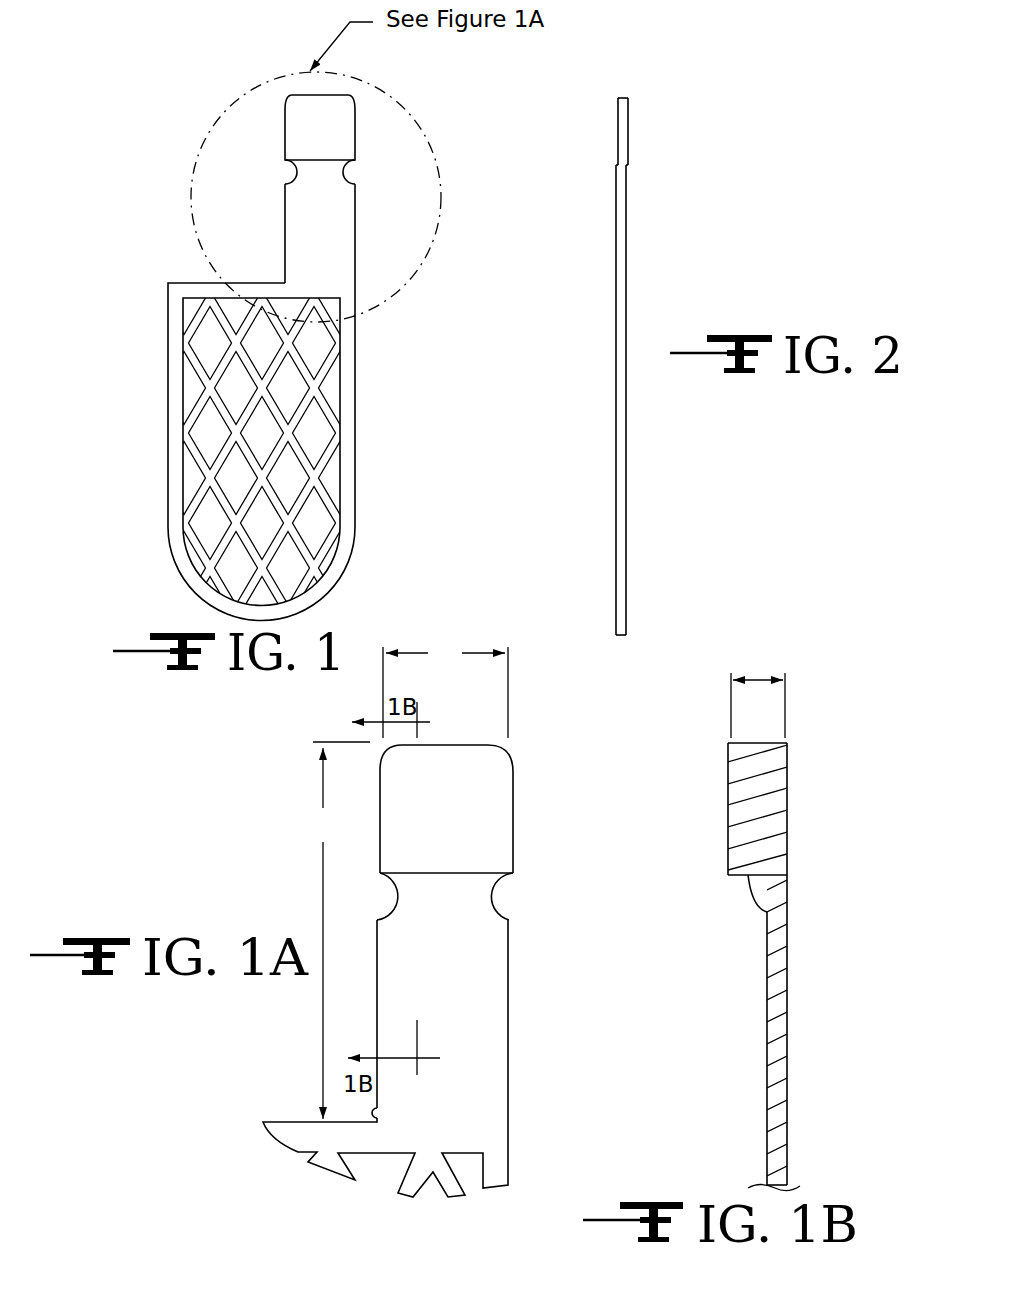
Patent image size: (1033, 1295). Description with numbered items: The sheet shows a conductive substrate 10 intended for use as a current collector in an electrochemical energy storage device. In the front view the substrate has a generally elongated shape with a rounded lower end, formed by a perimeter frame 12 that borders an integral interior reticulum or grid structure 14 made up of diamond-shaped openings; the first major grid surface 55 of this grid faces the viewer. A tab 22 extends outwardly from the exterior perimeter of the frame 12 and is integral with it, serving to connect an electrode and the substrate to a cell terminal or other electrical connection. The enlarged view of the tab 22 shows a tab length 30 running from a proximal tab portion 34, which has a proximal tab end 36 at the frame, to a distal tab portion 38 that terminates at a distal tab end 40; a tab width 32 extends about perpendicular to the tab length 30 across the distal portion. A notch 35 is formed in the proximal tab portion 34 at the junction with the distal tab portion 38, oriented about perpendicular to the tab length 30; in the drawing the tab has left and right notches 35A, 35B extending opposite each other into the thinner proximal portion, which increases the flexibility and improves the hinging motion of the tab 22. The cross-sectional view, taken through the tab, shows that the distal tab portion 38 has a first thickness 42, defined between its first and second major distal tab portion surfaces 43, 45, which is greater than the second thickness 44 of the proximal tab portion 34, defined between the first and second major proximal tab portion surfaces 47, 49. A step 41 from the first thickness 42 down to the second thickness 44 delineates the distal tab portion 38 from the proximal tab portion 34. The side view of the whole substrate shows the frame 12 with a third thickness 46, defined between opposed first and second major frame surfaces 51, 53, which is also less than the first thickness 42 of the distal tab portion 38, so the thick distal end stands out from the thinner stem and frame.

In FIG. 1, the conductive substrate 10 is at (150, 137).
In FIG. 2, the conductive substrate 10 is at (653, 152).
In FIG. 1, the perimeter frame 12 is at (345, 467).
In FIG. 2, the perimeter frame 12 is at (625, 532).
In FIG. 1, the grid structure 14 is at (214, 490).
In FIG. 1, the tab 22 is at (374, 190).
In FIG. 2, the tab 22 is at (634, 117).
In FIG. 1A, the tab 22 is at (300, 860).
In FIG. 1B, the tab 22 is at (686, 858).
In FIG. 1A, the tab length 30 is at (339, 930).
In FIG. 1A, the tab width 32 is at (445, 689).
In FIG. 1, the proximal tab portion 34 is at (300, 250).
In FIG. 2, the proximal tab portion 34 is at (627, 210).
In FIG. 1A, the proximal tab portion 34 is at (498, 1067).
In FIG. 1B, the proximal tab portion 34 is at (773, 1155).
In FIG. 1, the notch 35 is at (343, 175).
In FIG. 1A, the left notch 35A is at (488, 897).
In FIG. 1A, the right notch 35B is at (402, 892).
In FIG. 1A, the proximal tab end 36 is at (378, 1108).
In FIG. 1, the distal tab portion 38 is at (318, 122).
In FIG. 2, the distal tab portion 38 is at (622, 135).
In FIG. 1A, the distal tab portion 38 is at (487, 778).
In FIG. 1B, the distal tab portion 38 is at (763, 792).
In FIG. 1, the distal tab end 40 is at (322, 96).
In FIG. 2, the distal tab end 40 is at (622, 97).
In FIG. 1A, the distal tab end 40 is at (462, 745).
In FIG. 1B, the distal tab end 40 is at (763, 743).
In FIG. 1, the step 41 is at (296, 172).
In FIG. 2, the step 41 is at (628, 170).
In FIG. 1A, the step 41 is at (400, 887).
In FIG. 1B, the step 41 is at (766, 905).
In FIG. 1B, the first thickness 42 is at (756, 678).
In FIG. 2, the first major distal tab portion surface 43 is at (637, 119).
In FIG. 1B, the first major distal tab portion surface 43 is at (725, 812).
In FIG. 1B, the second thickness 44 is at (707, 1059).
In FIG. 2, the second major distal tab portion surface 45 is at (615, 116).
In FIG. 1B, the second major distal tab portion surface 45 is at (793, 853).
In FIG. 2, the third thickness 46 is at (685, 557).
In FIG. 2, the first major proximal tab portion surface 47 is at (630, 232).
In FIG. 1B, the first major proximal tab portion surface 47 is at (764, 1110).
In FIG. 2, the second major proximal tab portion surface 49 is at (614, 216).
In FIG. 1B, the second major proximal tab portion surface 49 is at (790, 1110).
In FIG. 1, the first major frame surface 51 is at (352, 388).
In FIG. 2, the first major frame surface 51 is at (629, 410).
In FIG. 2, the second major frame surface 53 is at (613, 410).
In FIG. 1, the first major grid surface 55 is at (213, 431).